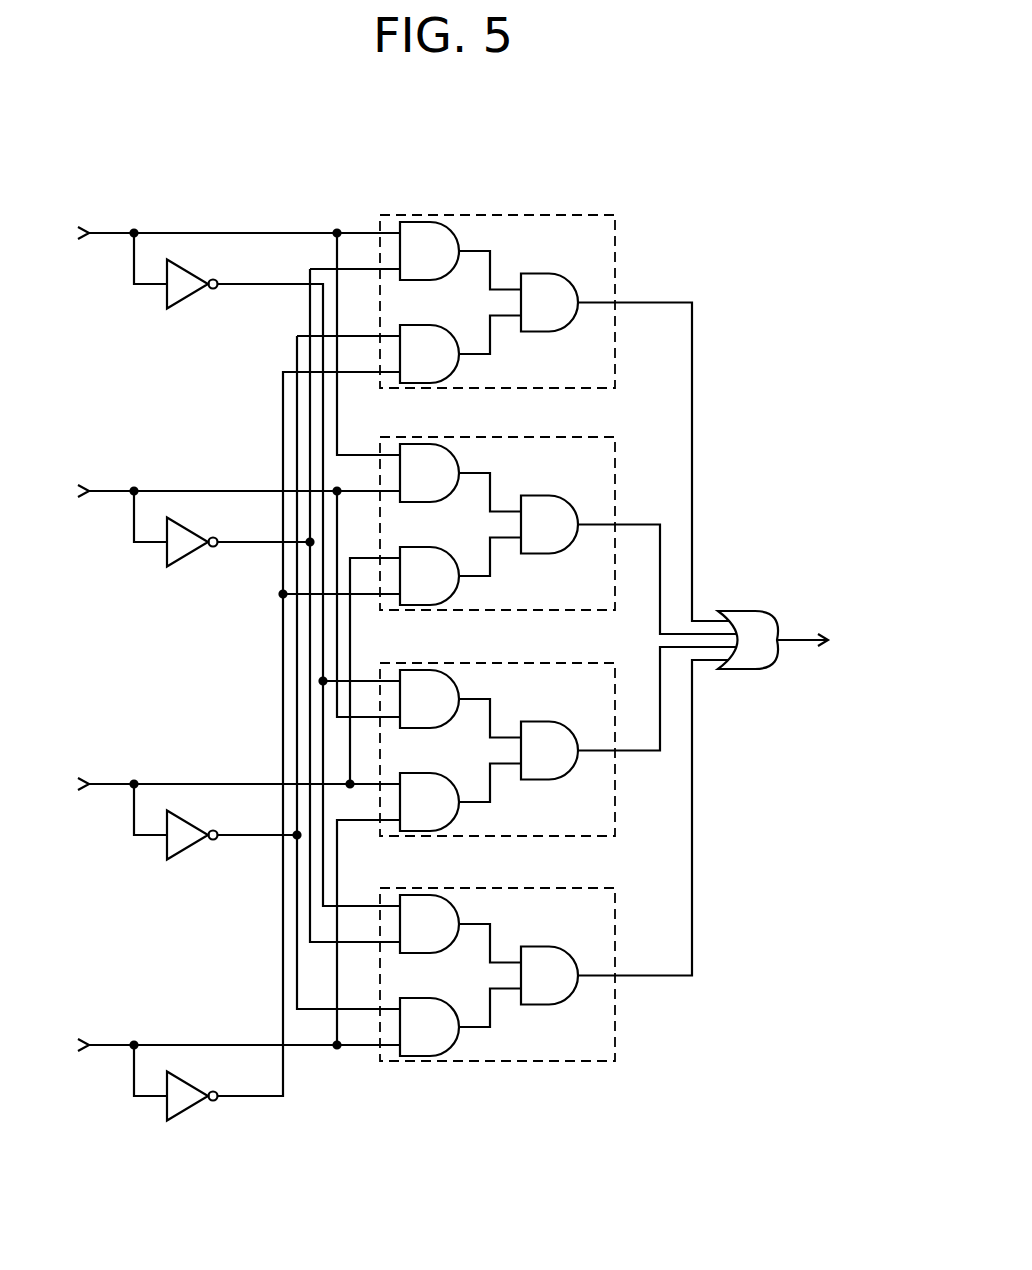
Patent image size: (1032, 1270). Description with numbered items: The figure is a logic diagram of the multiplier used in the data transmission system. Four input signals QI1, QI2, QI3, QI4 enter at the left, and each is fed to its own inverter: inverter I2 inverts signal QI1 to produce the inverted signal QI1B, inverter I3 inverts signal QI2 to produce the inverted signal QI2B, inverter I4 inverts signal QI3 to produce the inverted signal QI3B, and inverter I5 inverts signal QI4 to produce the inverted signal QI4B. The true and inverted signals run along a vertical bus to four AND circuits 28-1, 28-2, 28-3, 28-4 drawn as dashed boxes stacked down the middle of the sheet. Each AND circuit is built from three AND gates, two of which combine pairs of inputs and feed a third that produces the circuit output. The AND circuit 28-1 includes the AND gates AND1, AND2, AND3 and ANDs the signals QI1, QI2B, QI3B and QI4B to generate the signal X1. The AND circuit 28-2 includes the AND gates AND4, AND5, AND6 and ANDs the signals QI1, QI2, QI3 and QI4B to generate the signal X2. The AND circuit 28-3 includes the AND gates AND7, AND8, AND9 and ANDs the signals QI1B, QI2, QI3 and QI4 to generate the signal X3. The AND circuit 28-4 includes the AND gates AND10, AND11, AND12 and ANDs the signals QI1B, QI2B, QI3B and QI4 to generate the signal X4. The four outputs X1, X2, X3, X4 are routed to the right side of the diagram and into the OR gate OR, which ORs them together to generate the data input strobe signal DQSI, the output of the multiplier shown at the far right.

The AND circuit 28-1 is at (615, 238).
The AND circuit 28-2 is at (615, 460).
The AND circuit 28-3 is at (615, 790).
The AND circuit 28-4 is at (615, 911).
The inverter I2 is at (188, 297).
The inverter I3 is at (188, 555).
The inverter I4 is at (188, 848).
The inverter I5 is at (188, 1109).
The AND gate AND1 is at (458, 232).
The AND gate AND2 is at (457, 372).
The AND gate AND3 is at (566, 273).
The AND gate AND4 is at (458, 454).
The AND gate AND5 is at (457, 594).
The AND gate AND6 is at (566, 495).
The AND gate AND7 is at (458, 680).
The AND gate AND8 is at (457, 820).
The AND gate AND9 is at (566, 721).
The AND gate AND10 is at (458, 905).
The AND gate AND11 is at (457, 1045).
The AND gate AND12 is at (566, 946).
The OR gate OR is at (762, 610).
The signal QI1 is at (216, 338).
The signal QI2 is at (216, 598).
The signal QI3 is at (216, 679).
The signal QI4 is at (216, 940).
The inverted signal QI1B is at (309, 581).
The inverted signal QI2B is at (309, 605).
The inverted signal QI3B is at (309, 672).
The inverted signal QI4B is at (309, 734).
The signal X1 is at (653, 448).
The signal X2 is at (657, 566).
The signal X3 is at (657, 699).
The signal X4 is at (653, 818).
The data input strobe signal DQSI is at (827, 640).